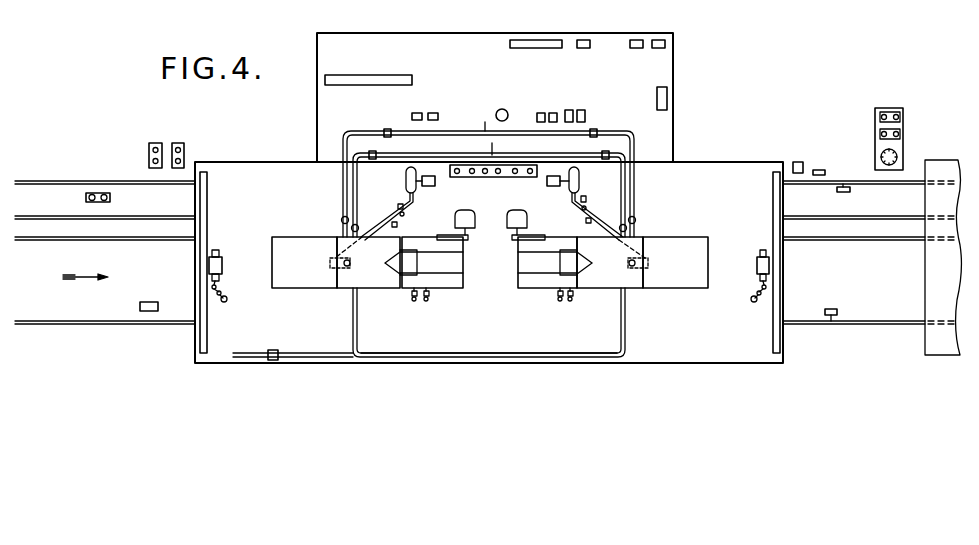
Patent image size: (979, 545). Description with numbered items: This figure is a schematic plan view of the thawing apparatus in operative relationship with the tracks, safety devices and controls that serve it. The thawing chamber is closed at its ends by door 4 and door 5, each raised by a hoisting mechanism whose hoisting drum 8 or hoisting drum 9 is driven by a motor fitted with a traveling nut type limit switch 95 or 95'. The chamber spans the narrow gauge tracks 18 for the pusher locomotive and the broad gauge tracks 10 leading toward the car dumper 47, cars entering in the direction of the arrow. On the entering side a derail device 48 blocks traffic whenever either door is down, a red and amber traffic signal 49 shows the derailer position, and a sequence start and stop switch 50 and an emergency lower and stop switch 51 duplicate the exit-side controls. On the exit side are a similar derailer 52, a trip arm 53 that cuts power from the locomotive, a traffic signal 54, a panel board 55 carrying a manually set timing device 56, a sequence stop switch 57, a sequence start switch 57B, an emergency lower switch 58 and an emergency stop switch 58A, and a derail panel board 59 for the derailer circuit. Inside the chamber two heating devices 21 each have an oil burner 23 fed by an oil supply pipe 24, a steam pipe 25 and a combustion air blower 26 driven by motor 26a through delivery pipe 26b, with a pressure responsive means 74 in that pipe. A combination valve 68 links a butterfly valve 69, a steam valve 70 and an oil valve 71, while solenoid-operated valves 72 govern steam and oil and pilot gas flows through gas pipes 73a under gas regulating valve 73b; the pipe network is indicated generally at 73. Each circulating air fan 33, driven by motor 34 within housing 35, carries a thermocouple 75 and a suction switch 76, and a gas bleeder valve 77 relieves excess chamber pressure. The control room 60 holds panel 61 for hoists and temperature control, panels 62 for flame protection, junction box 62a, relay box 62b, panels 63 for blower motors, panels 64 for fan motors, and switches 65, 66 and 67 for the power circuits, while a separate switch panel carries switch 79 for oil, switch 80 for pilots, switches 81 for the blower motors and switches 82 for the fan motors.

The door 4 is at (200, 338).
The door 5 is at (773, 338).
The hoisting drum 8 is at (209, 265).
The hoisting drum 9 is at (757, 266).
The lower supply line 10 is at (896, 321).
The narrow gauge tracks 18 is at (873, 185).
The heating device 21 is at (700, 243).
The oil burner 23 is at (645, 268).
The oil supply pipe 24 is at (634, 143).
The steam pipe 25 is at (625, 173).
The combustion air blower 26 is at (574, 167).
The motor 26a is at (555, 186).
The delivery pipe 26b is at (652, 238).
The circulating air fan 33 is at (522, 267).
The motor 34 is at (512, 222).
The housing 35 is at (525, 282).
The car dumper 47 is at (951, 357).
The derail device 48 is at (140, 306).
The traffic signal 49 is at (95, 193).
The sequence start and stop switch 50 is at (155, 143).
The emergency lower and stop switch 51 is at (178, 143).
The derailer 52 is at (831, 323).
The trip arm 53 is at (848, 180).
The traffic signal 54 is at (820, 170).
The panel board 55 is at (890, 110).
The timing device 56 is at (901, 153).
The sequence stop switch 57 is at (880, 135).
The sequence start switch 57B is at (905, 137).
The emergency lower switch 58 is at (883, 114).
The emergency stop switch 58A is at (900, 117).
The derail panel board 59 is at (798, 162).
The control cabinet 60 is at (364, 34).
The panel 61 is at (354, 72).
The panels 62 is at (432, 113).
The junction box 62a is at (537, 40).
The box 62b is at (582, 40).
The panels 63 is at (553, 113).
The panels 64 is at (581, 110).
The switch 65 is at (637, 40).
The switch 66 is at (662, 40).
The switch 67 is at (667, 100).
The combination valve 68 is at (496, 211).
The butterfly valve 69 is at (588, 221).
The valve 70 is at (489, 261).
The valve 71 is at (635, 218).
The solenoid-operated valve 72 is at (594, 130).
The inner pipe 73 is at (610, 152).
The gas pipe 73a is at (410, 358).
The gas regulating valve 73b is at (272, 362).
The pressure responsive means 74 is at (407, 187).
The thermocouple 75 is at (560, 301).
The suction switch 76 is at (570, 301).
The gas bleeder valve 77 is at (502, 109).
The switch 79 is at (457, 168).
The switch 80 is at (472, 168).
The switches 81 is at (493, 187).
The switches 82 is at (530, 168).
The limit switch 95 is at (232, 299).
The limit switch 95' is at (739, 299).